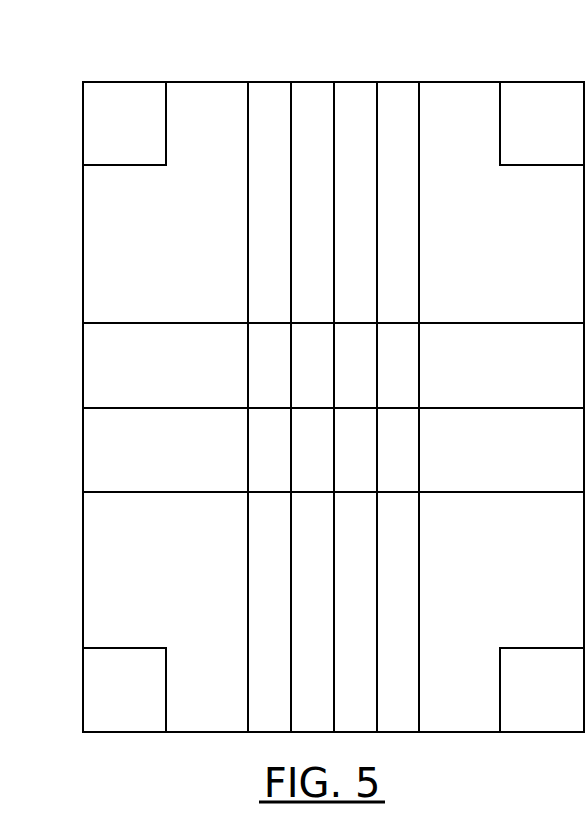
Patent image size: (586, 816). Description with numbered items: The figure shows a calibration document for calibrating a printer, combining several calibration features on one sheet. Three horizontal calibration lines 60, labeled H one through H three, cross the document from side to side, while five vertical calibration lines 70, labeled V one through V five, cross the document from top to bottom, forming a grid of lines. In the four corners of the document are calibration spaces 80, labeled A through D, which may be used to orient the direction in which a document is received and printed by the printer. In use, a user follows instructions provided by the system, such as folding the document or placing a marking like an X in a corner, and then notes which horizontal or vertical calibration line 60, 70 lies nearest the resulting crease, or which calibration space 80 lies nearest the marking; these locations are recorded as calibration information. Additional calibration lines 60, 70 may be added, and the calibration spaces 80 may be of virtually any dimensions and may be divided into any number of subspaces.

The calibration spaces 80 is at (125, 95).
The vertical calibration lines 70 is at (248, 98).
The horizontal calibration lines 60 is at (92, 492).